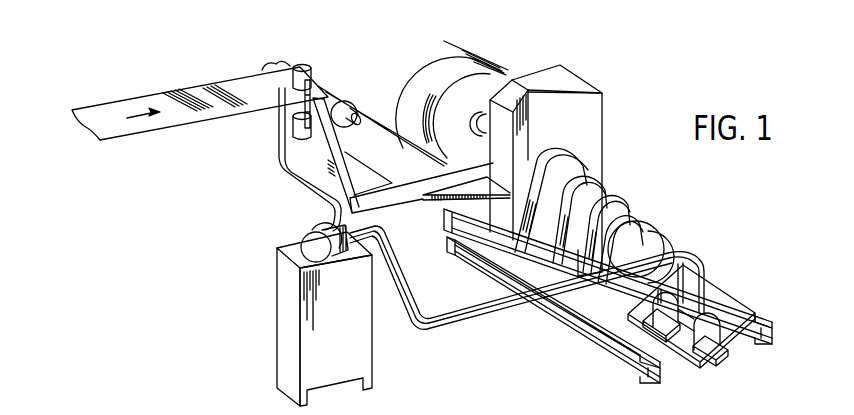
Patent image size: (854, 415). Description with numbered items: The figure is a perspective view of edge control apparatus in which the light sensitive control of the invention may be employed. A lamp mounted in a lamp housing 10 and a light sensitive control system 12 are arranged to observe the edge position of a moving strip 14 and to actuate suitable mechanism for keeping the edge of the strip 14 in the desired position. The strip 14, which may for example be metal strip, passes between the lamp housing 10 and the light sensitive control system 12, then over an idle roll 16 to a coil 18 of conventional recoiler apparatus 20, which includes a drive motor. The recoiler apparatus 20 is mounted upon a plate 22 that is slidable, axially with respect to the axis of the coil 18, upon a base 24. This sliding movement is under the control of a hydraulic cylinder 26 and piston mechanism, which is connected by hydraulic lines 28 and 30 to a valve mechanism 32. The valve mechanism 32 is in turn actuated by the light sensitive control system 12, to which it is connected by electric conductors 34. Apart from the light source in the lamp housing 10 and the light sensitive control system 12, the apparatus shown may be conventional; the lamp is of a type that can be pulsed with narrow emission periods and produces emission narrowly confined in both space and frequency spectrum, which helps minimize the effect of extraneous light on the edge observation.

The lamp housing 10 is at (293, 125).
The light sensitive control system 12 is at (303, 65).
The strip 14 is at (118, 108).
The idle roll 16 is at (348, 108).
The coil 18 is at (462, 60).
The recoiler apparatus 20 is at (590, 145).
The plate 22 is at (610, 296).
The base 24 is at (632, 343).
The hydraulic cylinder 26 is at (713, 323).
The hydraulic line 28 is at (421, 291).
The hydraulic line 30 is at (457, 326).
The valve mechanism 32 is at (314, 250).
The electric conductors 34 is at (292, 178).